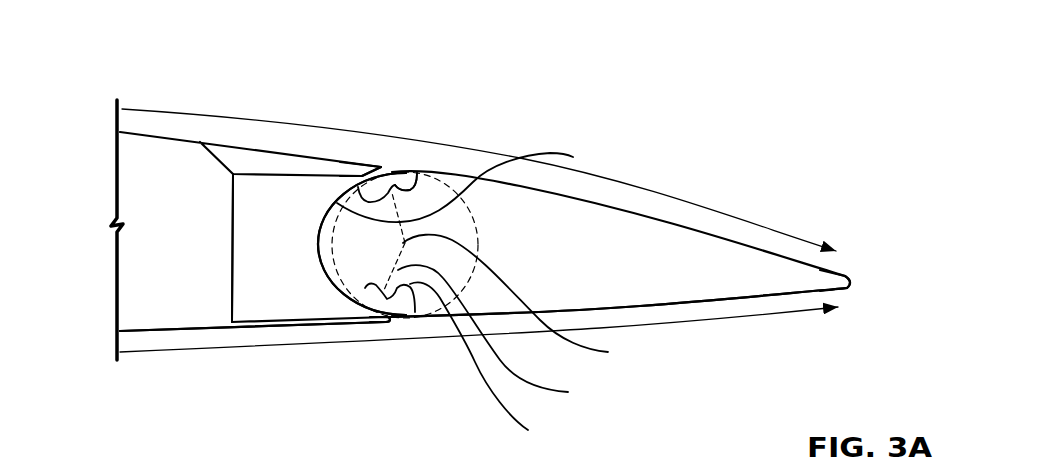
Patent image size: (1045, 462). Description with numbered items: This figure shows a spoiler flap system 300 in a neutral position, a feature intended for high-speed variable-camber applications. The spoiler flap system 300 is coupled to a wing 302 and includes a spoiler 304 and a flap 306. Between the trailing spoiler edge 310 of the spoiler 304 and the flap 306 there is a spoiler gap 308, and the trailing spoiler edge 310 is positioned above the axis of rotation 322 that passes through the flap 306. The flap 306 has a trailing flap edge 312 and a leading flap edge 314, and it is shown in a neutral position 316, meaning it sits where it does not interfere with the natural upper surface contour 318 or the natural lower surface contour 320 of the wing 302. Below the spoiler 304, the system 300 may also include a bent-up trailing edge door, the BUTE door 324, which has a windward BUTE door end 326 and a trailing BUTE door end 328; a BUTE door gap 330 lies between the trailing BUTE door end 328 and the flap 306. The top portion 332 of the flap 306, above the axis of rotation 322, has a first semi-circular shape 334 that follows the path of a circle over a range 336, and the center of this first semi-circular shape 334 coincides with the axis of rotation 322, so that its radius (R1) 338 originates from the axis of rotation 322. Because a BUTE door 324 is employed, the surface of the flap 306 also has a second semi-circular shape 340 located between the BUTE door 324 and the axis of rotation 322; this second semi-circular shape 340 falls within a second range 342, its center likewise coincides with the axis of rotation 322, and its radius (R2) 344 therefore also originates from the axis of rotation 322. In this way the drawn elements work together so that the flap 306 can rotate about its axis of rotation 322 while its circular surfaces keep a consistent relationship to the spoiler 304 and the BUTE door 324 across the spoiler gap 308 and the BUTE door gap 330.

The spoiler flap system 300 is at (782, 96).
The wing 302 is at (190, 186).
The spoiler 304 is at (253, 150).
The flap 306 is at (727, 286).
The spoiler gap 308 is at (410, 164).
The trailing spoiler edge 310 is at (380, 167).
The trailing flap edge 312 is at (873, 294).
The leading flap edge 314 is at (300, 253).
The neutral position 316 is at (822, 155).
The upper surface contour 318 is at (172, 110).
The lower surface contour 320 is at (165, 352).
The axis of rotation 322 is at (533, 302).
The bent-up trailing edge (BUTE) door 324 is at (323, 323).
The windward BUTE door end 326 is at (238, 305).
The trailing BUTE door end 328 is at (393, 329).
The BUTE door gap 330 is at (414, 323).
The top portion 332 is at (427, 184).
The first semi-circular shape 334 is at (398, 172).
The range 336 is at (481, 183).
The radius (R1) 338 is at (350, 196).
The second semi-circular shape 340 is at (370, 305).
The second range 342 is at (496, 365).
The radius (R2) 344 is at (511, 338).